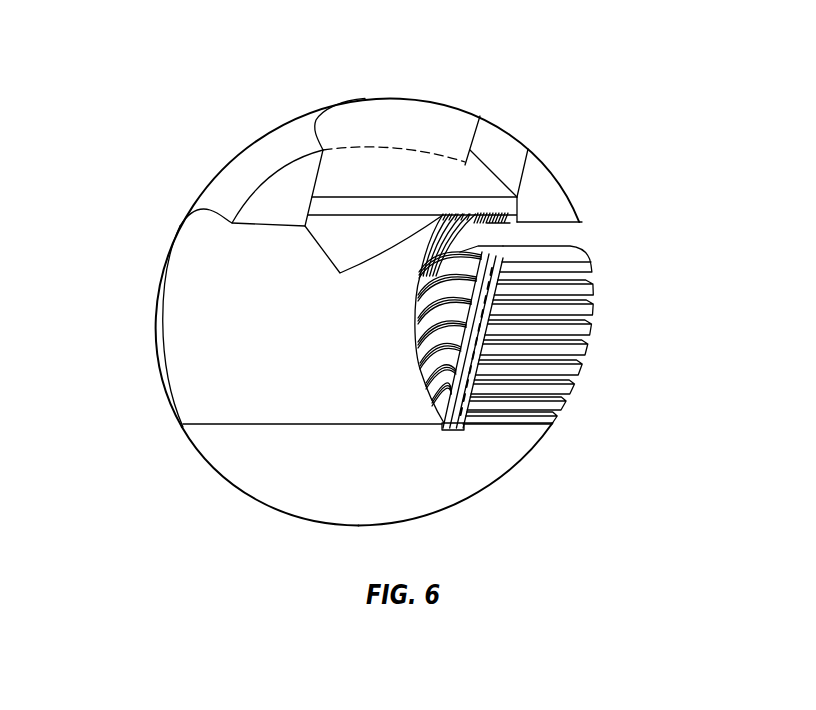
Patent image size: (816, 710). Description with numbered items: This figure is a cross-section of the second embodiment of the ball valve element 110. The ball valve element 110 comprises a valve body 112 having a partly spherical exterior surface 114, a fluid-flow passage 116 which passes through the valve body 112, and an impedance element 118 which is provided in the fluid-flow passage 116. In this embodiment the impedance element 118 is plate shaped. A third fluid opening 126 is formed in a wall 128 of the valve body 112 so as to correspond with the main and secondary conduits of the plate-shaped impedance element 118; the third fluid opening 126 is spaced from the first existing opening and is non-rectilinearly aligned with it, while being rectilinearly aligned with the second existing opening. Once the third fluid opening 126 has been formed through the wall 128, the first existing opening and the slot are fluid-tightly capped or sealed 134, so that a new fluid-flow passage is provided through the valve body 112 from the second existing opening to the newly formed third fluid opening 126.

The ball valve element 110 is at (150, 65).
The valve body 112 is at (237, 492).
The partly spherical exterior surface 114 is at (502, 467).
The fluid-flow passage 116 is at (168, 328).
The impedance element 118 is at (432, 396).
The third fluid opening 126 is at (608, 262).
The wall 128 is at (547, 183).
The cap 134 is at (378, 162).